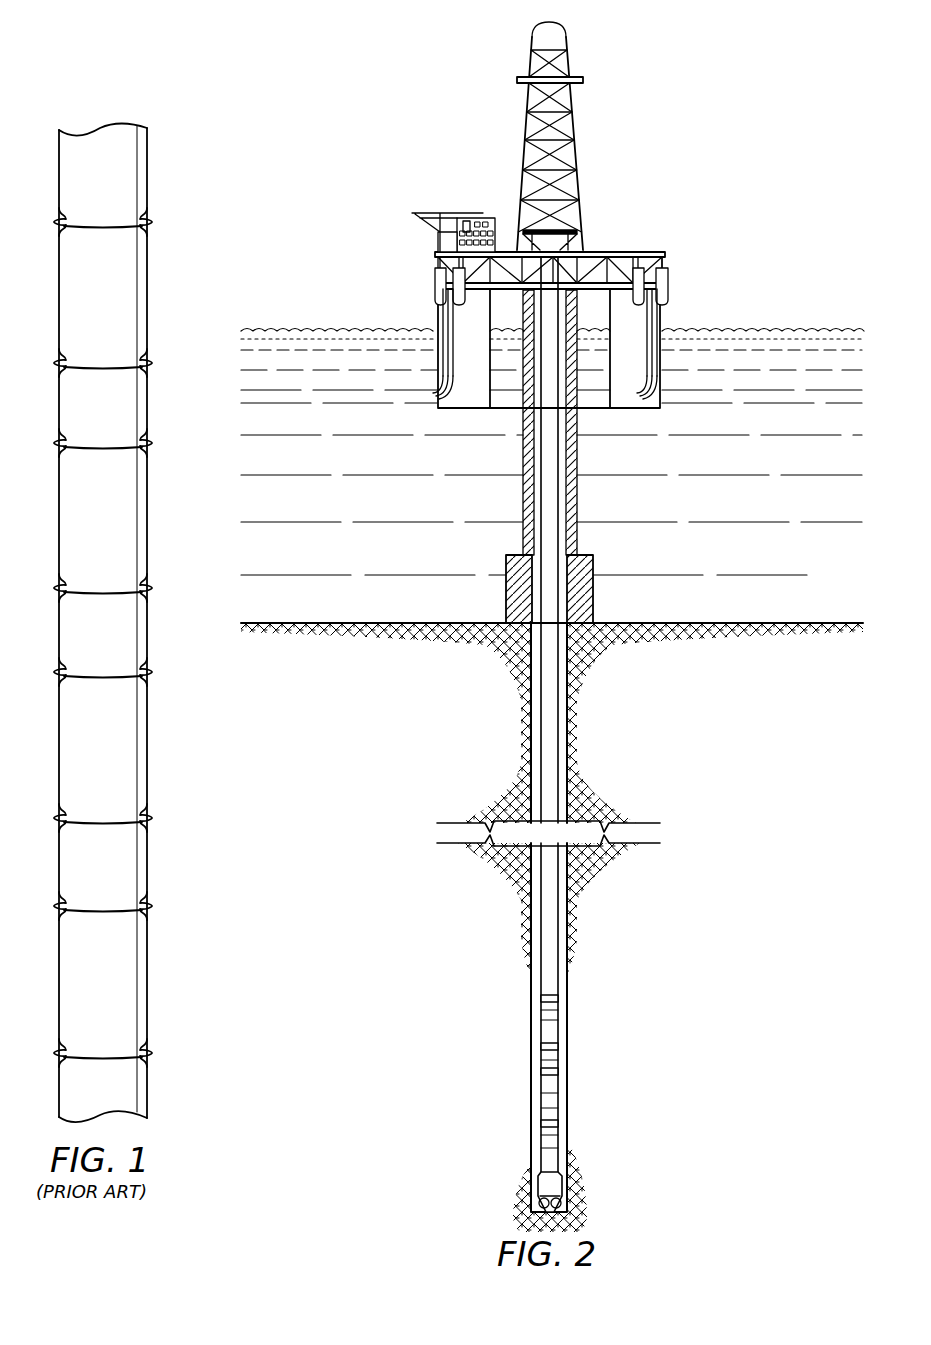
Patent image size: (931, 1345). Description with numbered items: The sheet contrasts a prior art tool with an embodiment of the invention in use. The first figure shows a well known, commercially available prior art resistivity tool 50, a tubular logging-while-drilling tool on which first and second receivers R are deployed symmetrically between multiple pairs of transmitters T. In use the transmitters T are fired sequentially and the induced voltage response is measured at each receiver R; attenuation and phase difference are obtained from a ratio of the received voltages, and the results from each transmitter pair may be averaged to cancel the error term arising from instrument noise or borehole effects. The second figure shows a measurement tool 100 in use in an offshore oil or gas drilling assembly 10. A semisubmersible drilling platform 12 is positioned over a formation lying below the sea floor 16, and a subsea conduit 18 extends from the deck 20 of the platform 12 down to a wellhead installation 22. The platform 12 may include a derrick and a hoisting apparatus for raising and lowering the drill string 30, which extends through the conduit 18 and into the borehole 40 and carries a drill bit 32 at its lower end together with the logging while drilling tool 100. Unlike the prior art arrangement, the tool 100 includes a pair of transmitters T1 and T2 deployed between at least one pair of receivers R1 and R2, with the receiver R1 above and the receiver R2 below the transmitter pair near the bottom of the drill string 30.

In FIG. 1, the prior art resistivity tool 50 is at (76, 87).
In FIG. 1, the transmitters T is at (94, 637).
In FIG. 1, the receivers R is at (94, 630).
In FIG. 2, the offshore oil or gas drilling assembly 10 is at (647, 145).
In FIG. 2, the semisubmersible drilling platform 12 is at (649, 254).
In FIG. 2, the sea floor 16 is at (813, 623).
In FIG. 2, the subsea conduit 18 is at (578, 498).
In FIG. 2, the deck 20 is at (620, 292).
In FIG. 2, the wellhead installation 22 is at (592, 546).
In FIG. 2, the drill string 30 is at (551, 441).
In FIG. 2, the drill bit 32 is at (561, 1206).
In FIG. 2, the borehole 40 is at (563, 736).
In FIG. 2, the logging while drilling tool 100 is at (544, 1066).
In FIG. 2, the first receiver R1 is at (559, 1000).
In FIG. 2, the first transmitter T1 is at (559, 1047).
In FIG. 2, the second transmitter T2 is at (559, 1072).
In FIG. 2, the second receiver R2 is at (559, 1123).